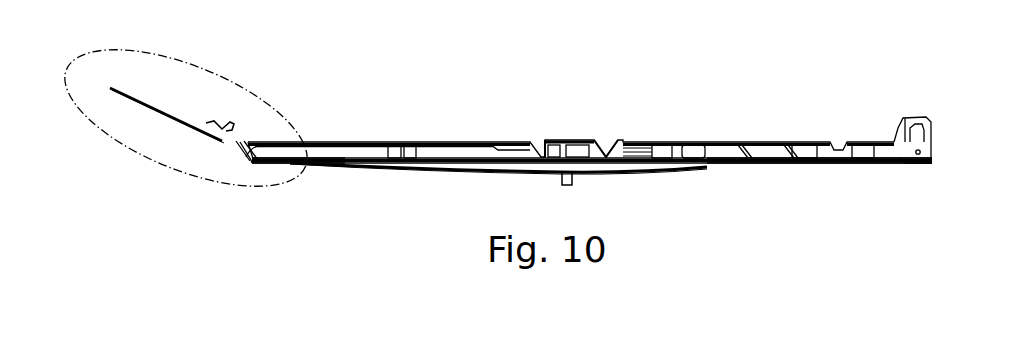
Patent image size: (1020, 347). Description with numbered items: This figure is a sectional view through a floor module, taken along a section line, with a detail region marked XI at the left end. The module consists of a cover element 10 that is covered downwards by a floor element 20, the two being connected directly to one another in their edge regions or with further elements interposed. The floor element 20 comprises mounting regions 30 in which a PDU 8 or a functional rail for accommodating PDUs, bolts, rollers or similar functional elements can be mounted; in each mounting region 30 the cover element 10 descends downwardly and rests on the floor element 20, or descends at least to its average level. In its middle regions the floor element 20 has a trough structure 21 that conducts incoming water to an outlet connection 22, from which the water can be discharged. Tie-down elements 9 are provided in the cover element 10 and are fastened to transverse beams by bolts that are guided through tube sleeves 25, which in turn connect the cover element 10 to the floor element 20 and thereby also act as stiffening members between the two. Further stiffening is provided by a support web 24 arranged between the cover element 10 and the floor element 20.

The detail view XI is at (226, 78).
The PDU 8 is at (678, 141).
The tie-down elements 9 is at (413, 143).
The cover element 10 is at (453, 141).
The floor element 20 is at (330, 163).
The trough structure 21 is at (648, 171).
The outlet connection 22 is at (571, 184).
The support web 24 is at (760, 164).
The tube sleeves 25 is at (773, 143).
The mounting regions 30 is at (598, 134).